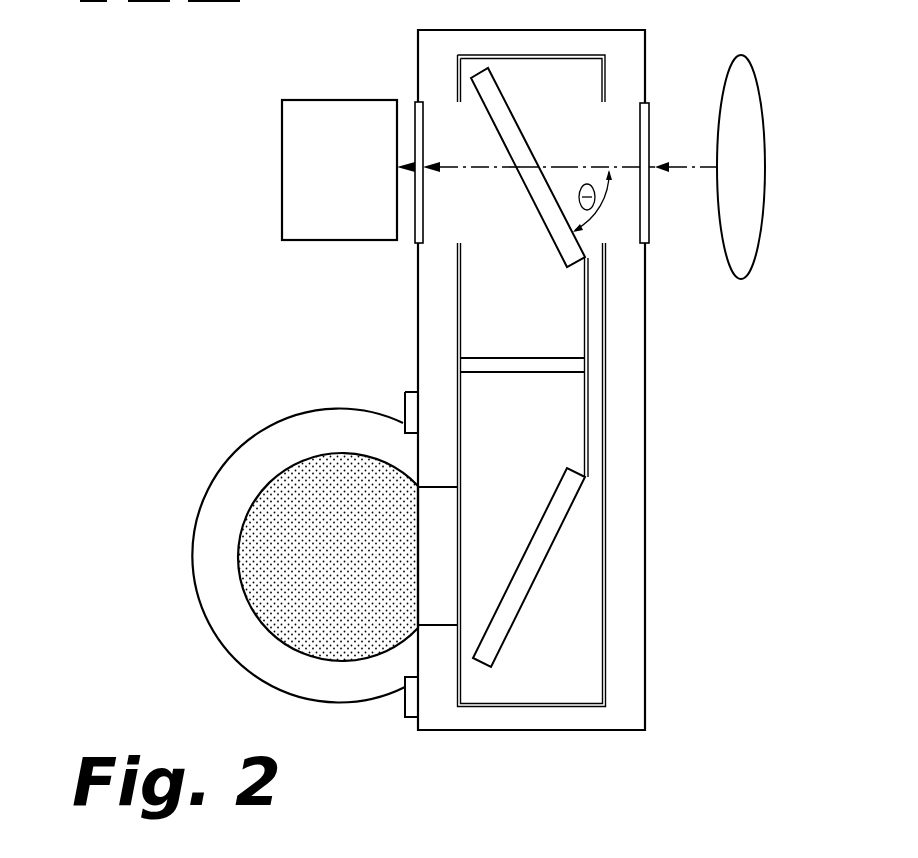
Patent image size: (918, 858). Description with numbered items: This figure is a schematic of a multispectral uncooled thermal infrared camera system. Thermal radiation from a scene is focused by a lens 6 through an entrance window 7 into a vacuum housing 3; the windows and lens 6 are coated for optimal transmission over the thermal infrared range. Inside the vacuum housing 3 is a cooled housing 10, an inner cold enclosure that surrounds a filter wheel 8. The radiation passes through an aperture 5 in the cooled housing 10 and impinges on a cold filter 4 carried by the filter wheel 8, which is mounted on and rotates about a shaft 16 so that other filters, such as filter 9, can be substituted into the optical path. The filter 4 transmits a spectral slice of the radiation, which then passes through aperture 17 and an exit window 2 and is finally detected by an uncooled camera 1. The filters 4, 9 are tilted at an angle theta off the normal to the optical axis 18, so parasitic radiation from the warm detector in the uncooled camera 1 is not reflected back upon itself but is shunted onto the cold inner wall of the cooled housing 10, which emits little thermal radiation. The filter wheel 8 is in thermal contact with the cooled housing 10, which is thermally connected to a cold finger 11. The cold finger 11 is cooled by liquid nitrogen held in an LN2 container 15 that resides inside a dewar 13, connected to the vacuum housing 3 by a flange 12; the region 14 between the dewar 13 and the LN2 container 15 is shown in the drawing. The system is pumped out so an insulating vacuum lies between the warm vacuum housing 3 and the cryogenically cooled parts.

The uncooled camera 1 is at (352, 118).
The exit window 2 is at (423, 150).
The vacuum housing 3 is at (472, 30).
The cold filter 4 is at (503, 112).
The aperture 5 is at (603, 118).
The lens 6 is at (750, 92).
The entrance window 7 is at (650, 112).
The filter wheel 8 is at (588, 433).
The filter 9 is at (520, 593).
The cooled housing 10 is at (605, 617).
The cold finger 11 is at (445, 525).
The flange 12 is at (407, 702).
The dewar 13 is at (283, 688).
The cavity 14 is at (226, 620).
The LN2 container 15 is at (263, 507).
The shaft 16 is at (525, 358).
The aperture 17 is at (459, 221).
The optical axis 18 is at (470, 167).